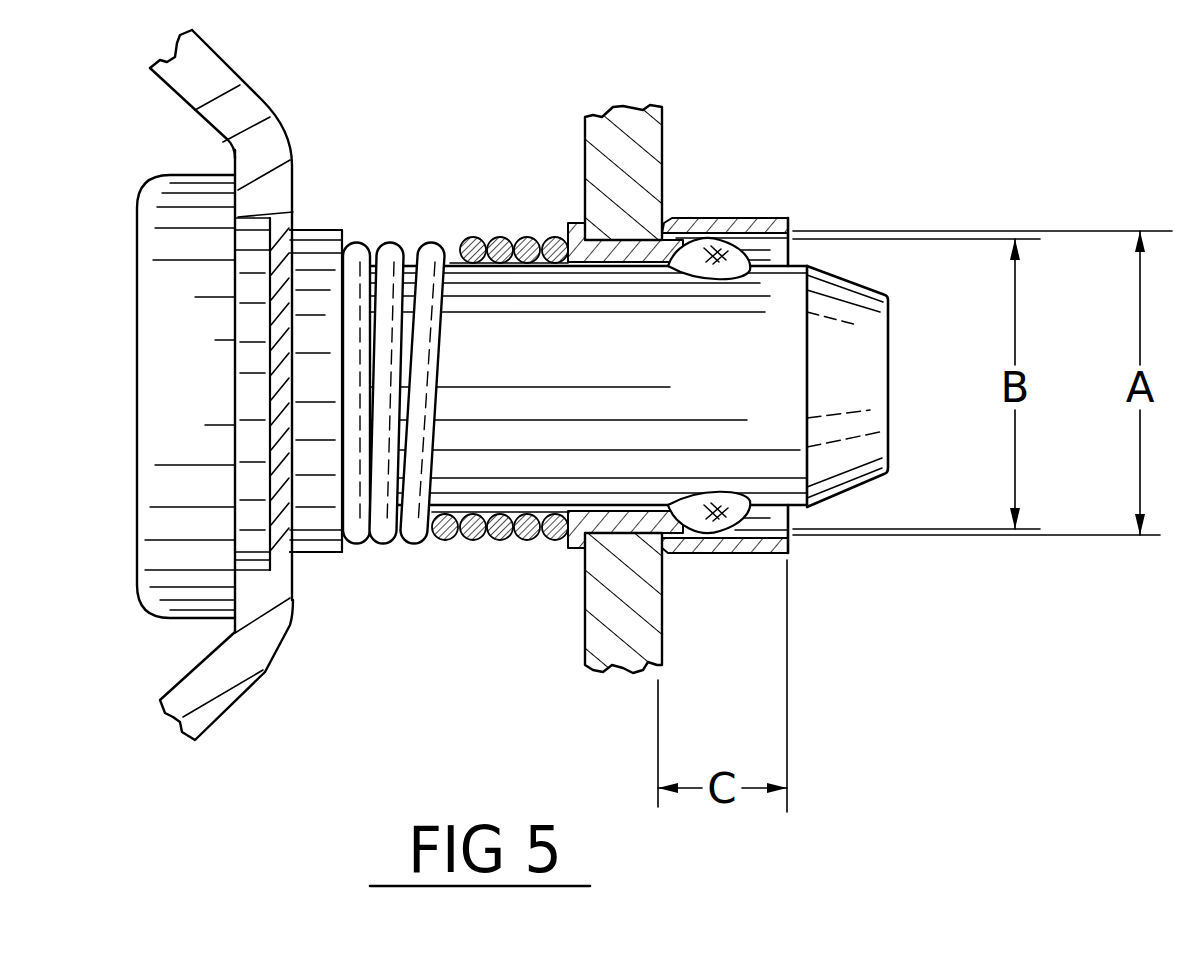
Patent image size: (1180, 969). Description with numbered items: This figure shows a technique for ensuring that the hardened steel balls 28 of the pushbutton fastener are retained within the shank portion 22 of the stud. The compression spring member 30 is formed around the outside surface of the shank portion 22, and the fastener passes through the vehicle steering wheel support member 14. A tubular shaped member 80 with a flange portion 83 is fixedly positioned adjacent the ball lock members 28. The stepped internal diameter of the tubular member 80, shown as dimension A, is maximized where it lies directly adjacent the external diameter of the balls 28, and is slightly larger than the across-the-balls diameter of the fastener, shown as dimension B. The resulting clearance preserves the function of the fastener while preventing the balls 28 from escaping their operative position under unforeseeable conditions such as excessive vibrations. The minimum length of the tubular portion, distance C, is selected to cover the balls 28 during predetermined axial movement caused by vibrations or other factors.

The vehicle steering wheel support member 14 is at (585, 167).
The shank portion 22 is at (452, 263).
The hardened steel balls 28 is at (700, 250).
The compression spring member 30 is at (388, 243).
The tubular shaped member 80 is at (777, 215).
The flange portion 83 is at (568, 543).